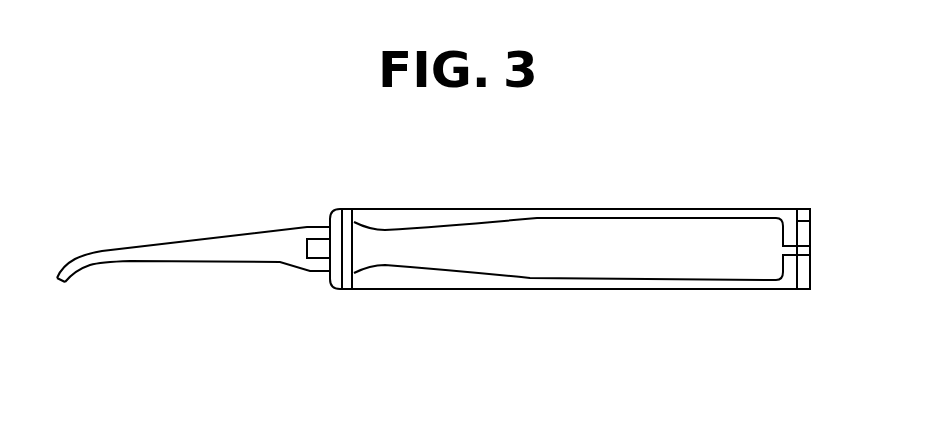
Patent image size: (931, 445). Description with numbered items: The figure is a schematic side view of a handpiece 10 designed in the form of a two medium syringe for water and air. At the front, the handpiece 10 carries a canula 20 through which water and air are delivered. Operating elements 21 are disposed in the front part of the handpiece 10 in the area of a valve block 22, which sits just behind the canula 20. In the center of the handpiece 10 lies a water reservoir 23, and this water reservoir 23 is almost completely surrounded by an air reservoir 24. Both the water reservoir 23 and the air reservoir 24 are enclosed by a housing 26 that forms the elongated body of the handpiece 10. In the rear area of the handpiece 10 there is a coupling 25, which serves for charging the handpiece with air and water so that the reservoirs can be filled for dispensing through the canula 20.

The handpiece 10 is at (665, 210).
The canula 20 is at (195, 263).
The operating elements 21 is at (340, 209).
The valve block 22 is at (345, 289).
The water reservoir 23 is at (547, 245).
The air reservoir 24 is at (789, 210).
The coupling 25 is at (805, 282).
The housing 26 is at (632, 290).